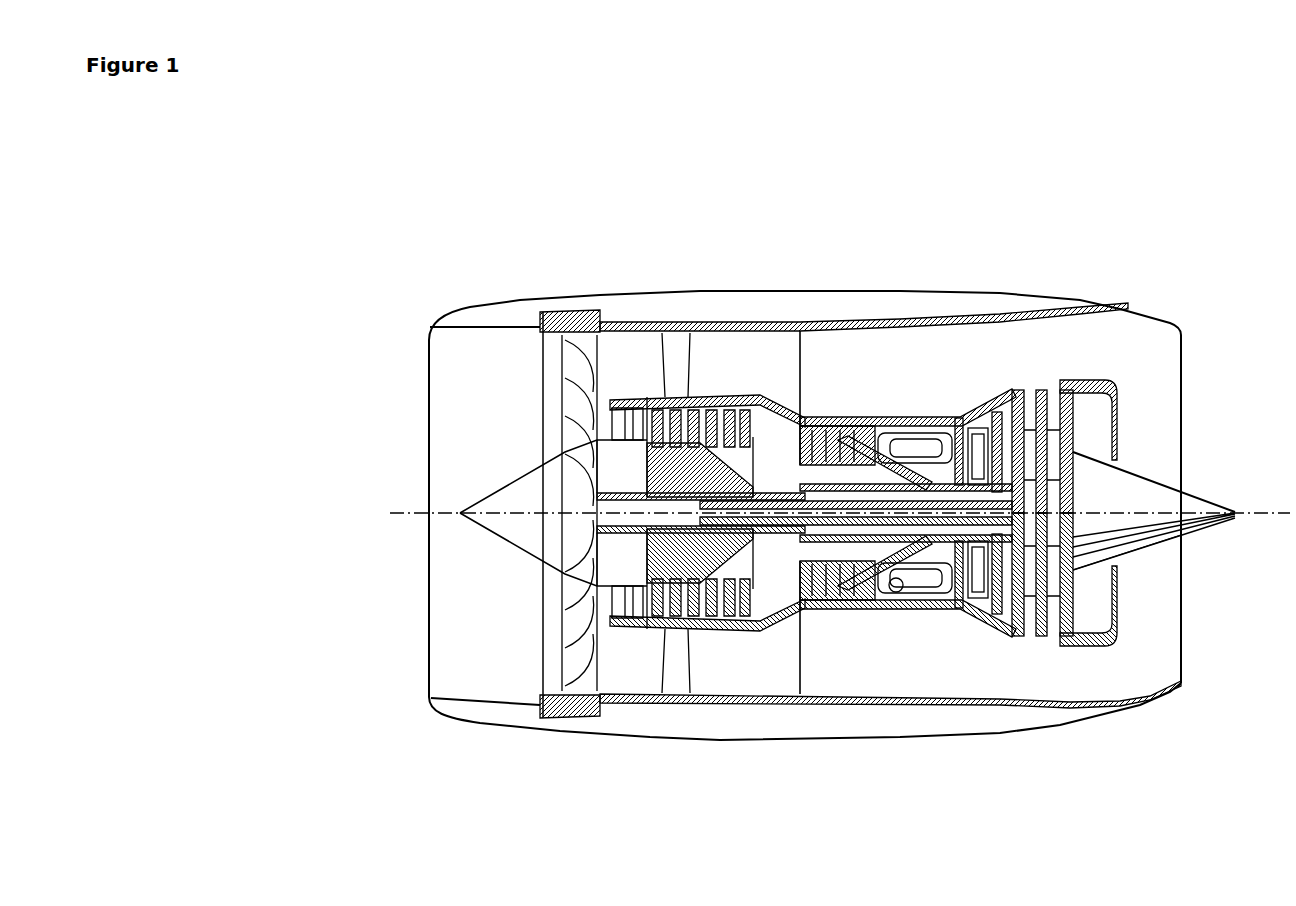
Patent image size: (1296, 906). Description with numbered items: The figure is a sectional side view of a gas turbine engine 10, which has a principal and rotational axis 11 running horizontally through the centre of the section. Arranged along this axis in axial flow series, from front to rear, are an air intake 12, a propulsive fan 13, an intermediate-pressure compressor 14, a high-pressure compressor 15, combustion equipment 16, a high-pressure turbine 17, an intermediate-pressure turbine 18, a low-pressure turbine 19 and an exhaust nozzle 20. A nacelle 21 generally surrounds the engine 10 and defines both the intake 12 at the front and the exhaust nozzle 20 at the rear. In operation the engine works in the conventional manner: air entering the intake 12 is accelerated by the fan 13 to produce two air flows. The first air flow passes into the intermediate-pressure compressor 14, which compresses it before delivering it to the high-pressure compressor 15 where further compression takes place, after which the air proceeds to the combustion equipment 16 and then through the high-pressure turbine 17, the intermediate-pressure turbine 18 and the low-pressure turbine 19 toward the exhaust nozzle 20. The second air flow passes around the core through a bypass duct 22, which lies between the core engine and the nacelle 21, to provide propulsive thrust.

The gas turbine engine 10 is at (402, 372).
The principal and rotational axis 11 is at (428, 511).
The air intake 12 is at (498, 328).
The propulsive fan 13 is at (565, 668).
The intermediate-pressure compressor 14 is at (700, 598).
The high-pressure compressor 15 is at (822, 440).
The combustion equipment 16 is at (905, 592).
The high-pressure turbine 17 is at (942, 612).
The intermediate-pressure turbine 18 is at (992, 414).
The low-pressure turbine 19 is at (1005, 630).
The exhaust nozzle 20 is at (1181, 683).
The nacelle 21 is at (957, 288).
The bypass duct 22 is at (740, 374).